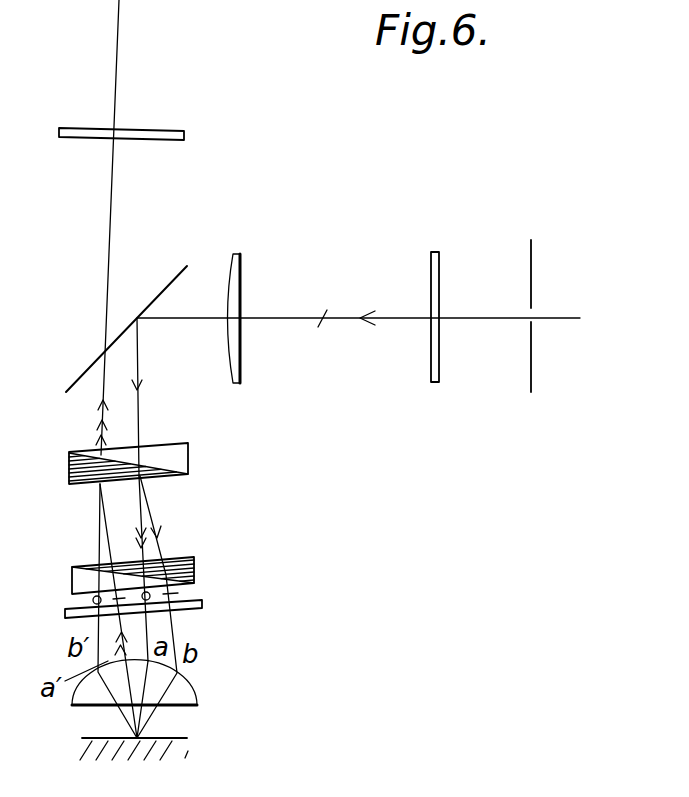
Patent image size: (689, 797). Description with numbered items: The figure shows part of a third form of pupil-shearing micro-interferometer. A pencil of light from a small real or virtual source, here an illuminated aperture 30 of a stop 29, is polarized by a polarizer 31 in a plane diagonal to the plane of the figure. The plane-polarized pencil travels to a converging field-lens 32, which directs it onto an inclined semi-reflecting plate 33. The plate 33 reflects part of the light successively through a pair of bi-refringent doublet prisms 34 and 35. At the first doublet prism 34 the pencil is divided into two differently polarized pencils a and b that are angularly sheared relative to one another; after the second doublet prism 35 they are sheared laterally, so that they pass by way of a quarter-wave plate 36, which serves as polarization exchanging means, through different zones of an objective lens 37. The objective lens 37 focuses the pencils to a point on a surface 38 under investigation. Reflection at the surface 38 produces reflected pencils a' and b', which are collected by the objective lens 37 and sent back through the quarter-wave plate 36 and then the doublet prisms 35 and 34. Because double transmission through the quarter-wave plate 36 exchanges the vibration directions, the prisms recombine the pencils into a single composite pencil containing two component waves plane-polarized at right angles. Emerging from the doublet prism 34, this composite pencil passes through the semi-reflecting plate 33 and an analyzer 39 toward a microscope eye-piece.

The stop 29 is at (532, 242).
The illuminated aperture 30 is at (533, 312).
The polarizer 31 is at (438, 252).
The converging field-lens 32 is at (240, 252).
The semi-reflecting plate 33 is at (76, 380).
The first bi-refringent doublet prism 34 is at (180, 460).
The second bi-refringent doublet prism 35 is at (190, 568).
The quarter-wave plate 36 is at (202, 605).
The objective lens 37 is at (197, 692).
The surface under investigation 38 is at (183, 738).
The analyzer 39 is at (180, 130).